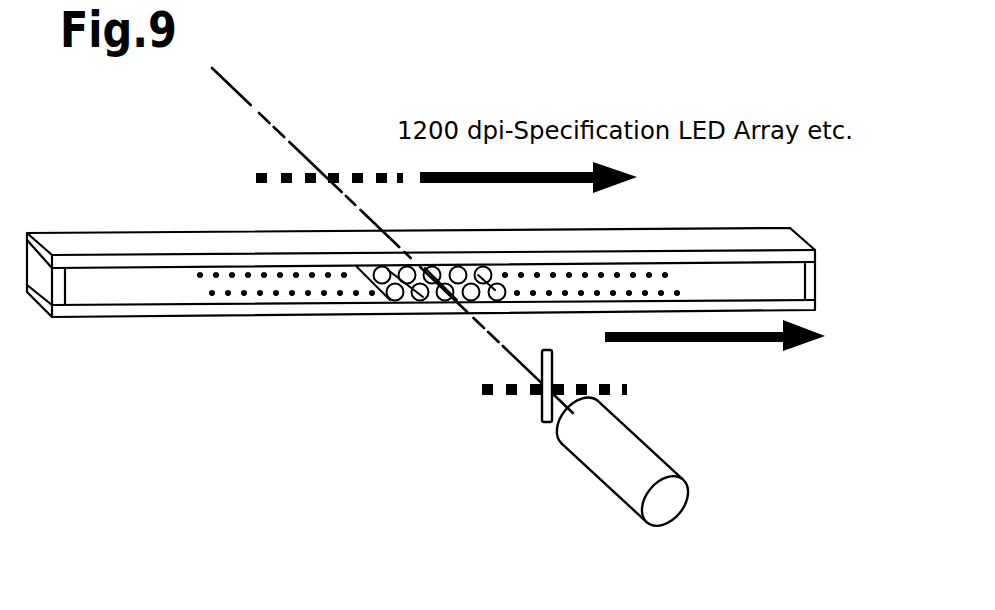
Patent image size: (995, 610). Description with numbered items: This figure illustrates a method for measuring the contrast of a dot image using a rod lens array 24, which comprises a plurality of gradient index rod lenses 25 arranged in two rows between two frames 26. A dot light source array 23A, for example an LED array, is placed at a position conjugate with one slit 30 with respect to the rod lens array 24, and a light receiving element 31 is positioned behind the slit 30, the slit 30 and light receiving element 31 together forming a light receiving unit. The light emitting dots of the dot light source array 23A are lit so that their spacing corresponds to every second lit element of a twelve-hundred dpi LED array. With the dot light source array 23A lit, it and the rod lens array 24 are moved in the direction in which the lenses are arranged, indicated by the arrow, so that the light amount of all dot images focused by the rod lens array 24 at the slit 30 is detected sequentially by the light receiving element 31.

The dot light source array 23A is at (353, 168).
The rod lens array 24 is at (421, 268).
The gradient index rod lenses 25 is at (420, 301).
The frames 26 is at (760, 234).
The slit 30 is at (556, 359).
The light receiving element 31 is at (673, 462).